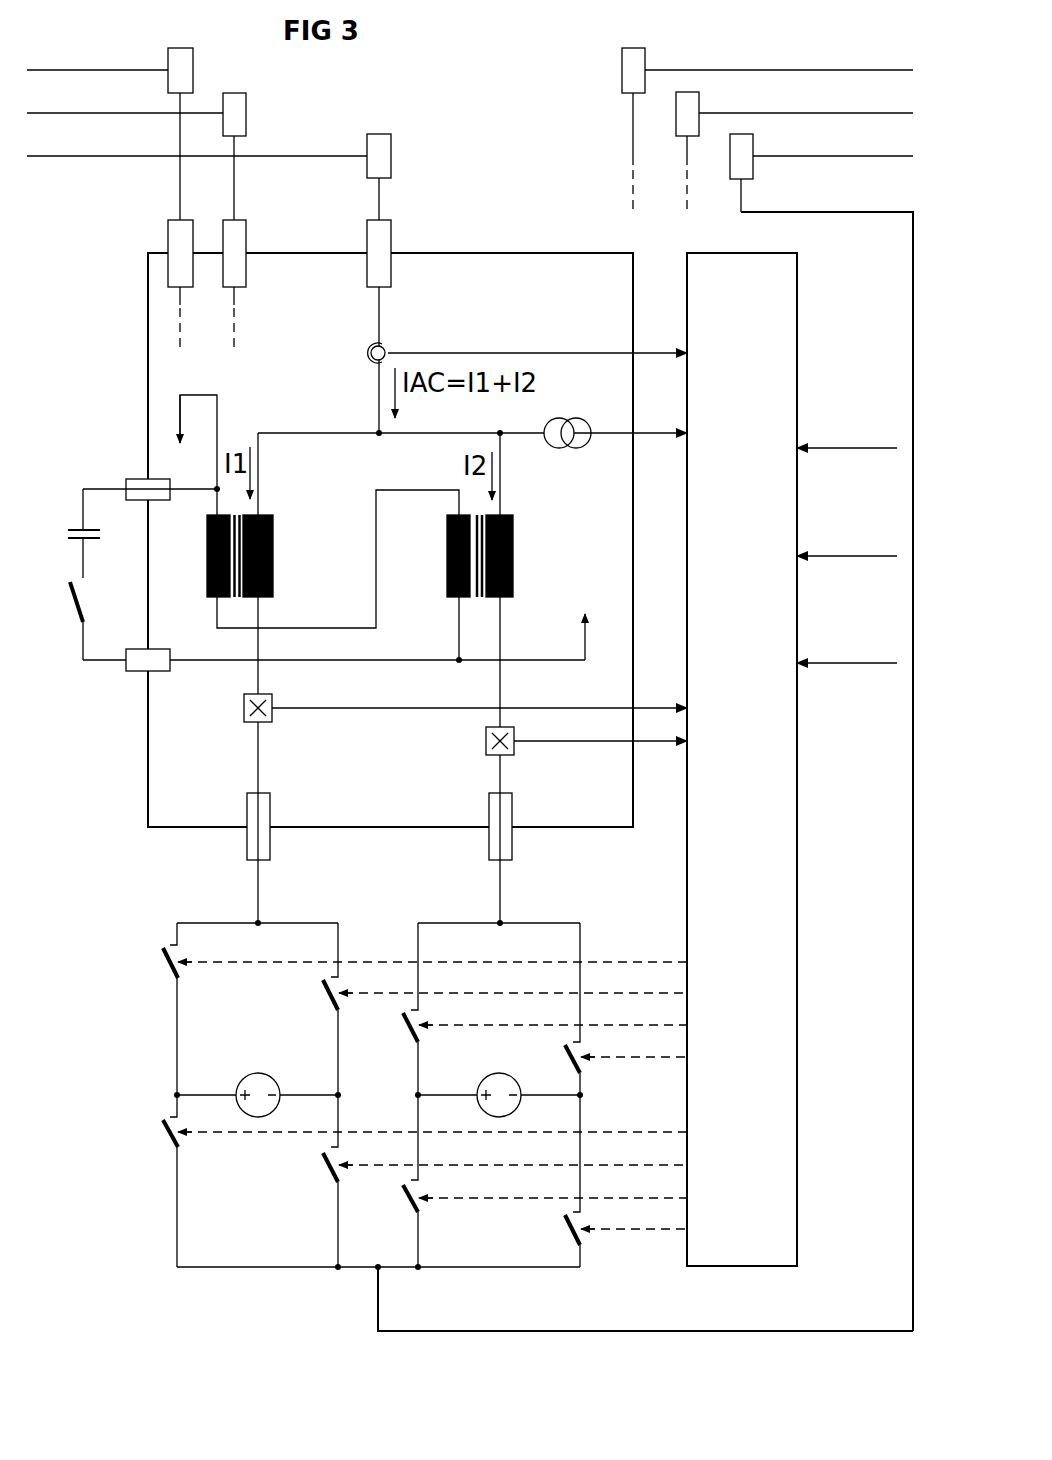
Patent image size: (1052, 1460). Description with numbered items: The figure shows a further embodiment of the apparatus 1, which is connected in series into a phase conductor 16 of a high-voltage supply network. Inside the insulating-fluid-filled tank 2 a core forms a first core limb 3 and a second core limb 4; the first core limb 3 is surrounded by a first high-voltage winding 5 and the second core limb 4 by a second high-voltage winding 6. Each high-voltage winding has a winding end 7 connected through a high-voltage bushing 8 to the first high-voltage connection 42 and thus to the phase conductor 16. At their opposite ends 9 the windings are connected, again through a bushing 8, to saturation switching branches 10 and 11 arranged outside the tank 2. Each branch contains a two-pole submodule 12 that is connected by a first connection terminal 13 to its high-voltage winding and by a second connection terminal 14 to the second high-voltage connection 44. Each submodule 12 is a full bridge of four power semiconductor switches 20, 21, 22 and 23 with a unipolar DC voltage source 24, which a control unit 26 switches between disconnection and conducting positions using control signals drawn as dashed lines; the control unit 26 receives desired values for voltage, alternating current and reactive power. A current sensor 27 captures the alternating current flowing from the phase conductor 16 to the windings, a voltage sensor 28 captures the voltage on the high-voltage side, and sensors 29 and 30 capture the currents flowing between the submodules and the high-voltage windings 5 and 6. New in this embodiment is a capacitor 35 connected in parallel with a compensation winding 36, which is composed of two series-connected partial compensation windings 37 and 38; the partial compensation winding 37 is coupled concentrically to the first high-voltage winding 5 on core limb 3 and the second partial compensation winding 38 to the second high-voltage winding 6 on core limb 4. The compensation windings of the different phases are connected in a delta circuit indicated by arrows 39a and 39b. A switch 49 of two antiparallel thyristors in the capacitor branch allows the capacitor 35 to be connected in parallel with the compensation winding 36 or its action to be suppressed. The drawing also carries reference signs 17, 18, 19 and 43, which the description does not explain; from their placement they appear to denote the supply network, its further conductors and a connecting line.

The apparatus 1 is at (76, 396).
The tank 2 is at (172, 828).
The first core limb 3 is at (362, 562).
The second core limb 4 is at (480, 576).
The first high-voltage winding 5 is at (273, 552).
The second high-voltage winding 6 is at (513, 552).
The winding end 7 is at (273, 517).
The high-voltage bushing 8 is at (168, 240).
The winding end facing away from the first high-voltage connection 9 is at (273, 597).
The saturation switching branch 10 is at (347, 1064).
The saturation switching branch 11 is at (510, 912).
The two-pole submodule 12 is at (162, 1276).
The first connection terminal 13 is at (258, 905).
The second connection terminal 14 is at (338, 1269).
The phase conductor 16 is at (133, 157).
The AC grid 17 is at (772, 55).
The grid phase line 18 is at (115, 114).
The grid phase line 19 is at (100, 71).
The power semiconductor switch 20 is at (166, 960).
The power semiconductor switch 21 is at (165, 1135).
The power semiconductor switch 22 is at (322, 995).
The power semiconductor switch 23 is at (322, 1163).
The DC voltage source 24 is at (245, 1078).
The control unit 26 is at (797, 1172).
The current sensor 27 is at (368, 352).
The voltage sensor 28 is at (582, 424).
The sensor 29 is at (244, 708).
The sensor 30 is at (486, 741).
The capacitor 35 is at (68, 533).
The compensation winding 36 is at (203, 476).
The partial compensation winding 37 is at (207, 551).
The second partial compensation winding 38 is at (447, 551).
The arrow 39a is at (198, 393).
The arrow 39b is at (587, 661).
The first high-voltage connection 42 is at (193, 72).
The common DC line 43 is at (478, 1333).
The second high-voltage connection 44 is at (622, 72).
The switch 49 is at (70, 585).